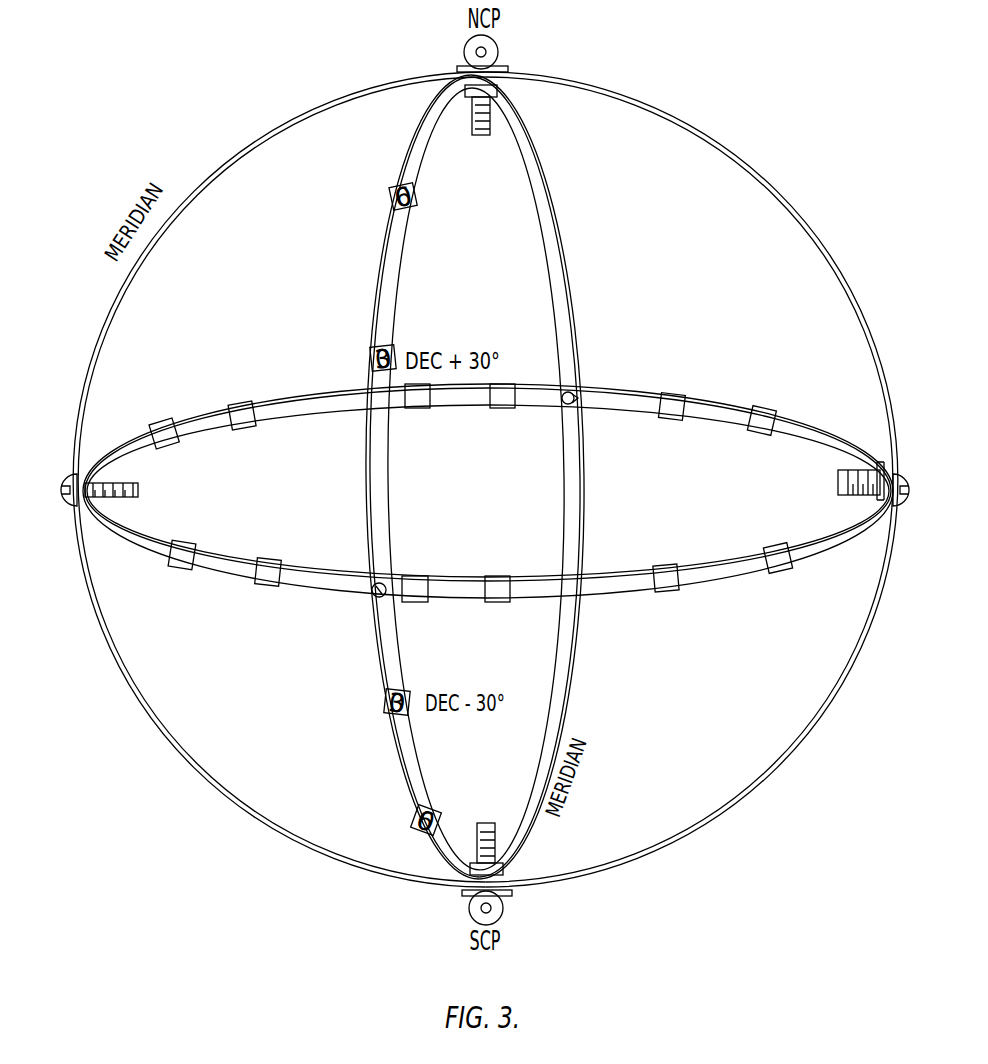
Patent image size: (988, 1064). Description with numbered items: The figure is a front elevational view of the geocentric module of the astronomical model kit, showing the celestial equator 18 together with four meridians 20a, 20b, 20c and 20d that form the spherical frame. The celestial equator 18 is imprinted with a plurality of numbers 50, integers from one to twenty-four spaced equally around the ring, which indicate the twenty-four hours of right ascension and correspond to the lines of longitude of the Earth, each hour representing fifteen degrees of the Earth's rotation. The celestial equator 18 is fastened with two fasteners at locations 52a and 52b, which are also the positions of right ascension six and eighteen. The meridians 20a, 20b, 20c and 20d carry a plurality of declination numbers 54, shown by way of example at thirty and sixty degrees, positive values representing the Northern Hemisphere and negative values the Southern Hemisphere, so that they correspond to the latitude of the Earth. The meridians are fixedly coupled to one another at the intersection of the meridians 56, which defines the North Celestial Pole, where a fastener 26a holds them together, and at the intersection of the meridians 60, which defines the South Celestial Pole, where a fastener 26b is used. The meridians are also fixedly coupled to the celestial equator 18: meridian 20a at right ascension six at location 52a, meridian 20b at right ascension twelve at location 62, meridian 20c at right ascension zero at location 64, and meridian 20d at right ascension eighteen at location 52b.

The celestial equator 18 is at (700, 576).
The meridian 20a is at (748, 158).
The meridian 20b is at (556, 219).
The meridian 20c is at (412, 152).
The meridian 20d is at (352, 92).
The fastener 26a is at (478, 102).
The fastener 26b is at (486, 822).
The plurality of numbers 50 is at (412, 603).
The fastener location 52a is at (866, 430).
The fastener location 52b is at (92, 478).
The declination numbers 54 is at (398, 342).
The intersection of the meridians 56 is at (505, 60).
The intersection of the meridians 60 is at (508, 896).
The coupling location at right ascension twelve 62 is at (574, 404).
The coupling location at right ascension zero 64 is at (382, 583).